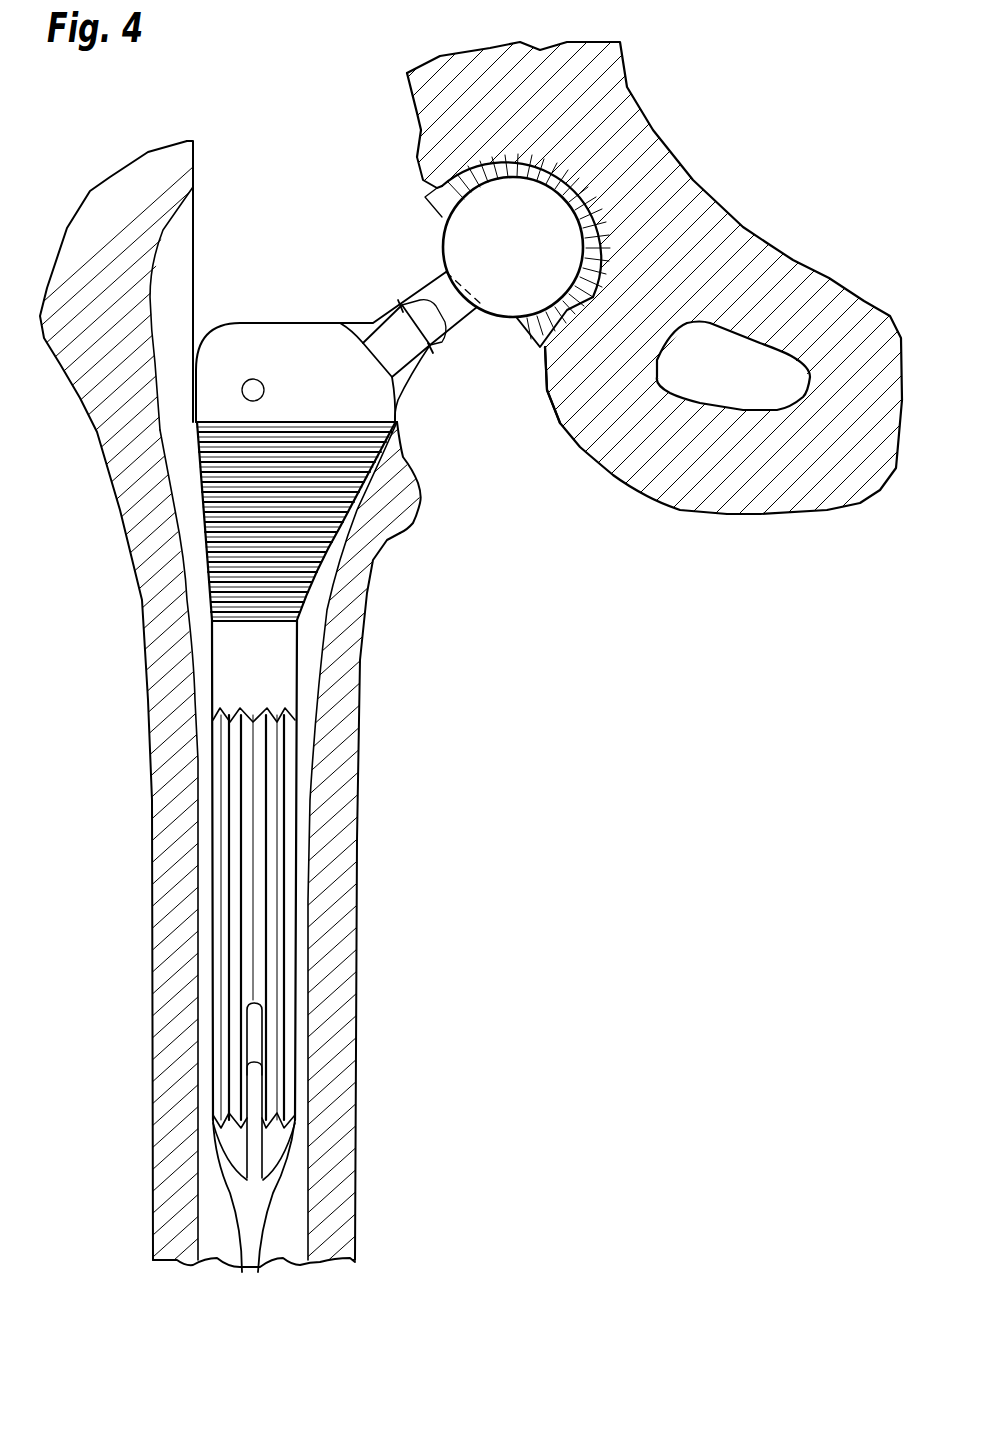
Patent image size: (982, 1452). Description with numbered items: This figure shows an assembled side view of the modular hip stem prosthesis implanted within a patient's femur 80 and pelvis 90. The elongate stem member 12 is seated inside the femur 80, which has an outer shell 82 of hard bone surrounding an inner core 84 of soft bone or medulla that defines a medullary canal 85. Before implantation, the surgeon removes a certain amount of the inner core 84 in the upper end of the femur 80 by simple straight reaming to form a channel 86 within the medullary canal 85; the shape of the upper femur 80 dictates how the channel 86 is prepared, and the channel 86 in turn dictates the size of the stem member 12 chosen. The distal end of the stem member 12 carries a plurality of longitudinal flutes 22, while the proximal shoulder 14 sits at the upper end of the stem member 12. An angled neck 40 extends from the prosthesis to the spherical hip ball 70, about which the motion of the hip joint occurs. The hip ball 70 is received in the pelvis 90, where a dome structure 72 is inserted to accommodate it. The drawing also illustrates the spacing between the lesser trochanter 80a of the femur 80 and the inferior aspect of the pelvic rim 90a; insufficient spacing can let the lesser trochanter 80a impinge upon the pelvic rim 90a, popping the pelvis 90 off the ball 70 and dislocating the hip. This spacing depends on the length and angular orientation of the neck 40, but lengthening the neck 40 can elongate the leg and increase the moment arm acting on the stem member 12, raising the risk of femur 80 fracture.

The stem member 12 is at (253, 675).
The proximal shoulder 14 is at (277, 322).
The longitudinal flutes 22 is at (268, 812).
The neck 40 is at (373, 323).
The hip ball 70 is at (475, 232).
The dome structure 72 is at (527, 320).
The femur 80 is at (142, 680).
The lesser trochanter 80a is at (420, 503).
The outer shell 82 is at (348, 630).
The inner core 84 is at (313, 845).
The medullary canal 85 is at (248, 1250).
The channel 86 is at (280, 876).
The pelvis 90 is at (698, 478).
The pelvic rim 90a is at (560, 428).